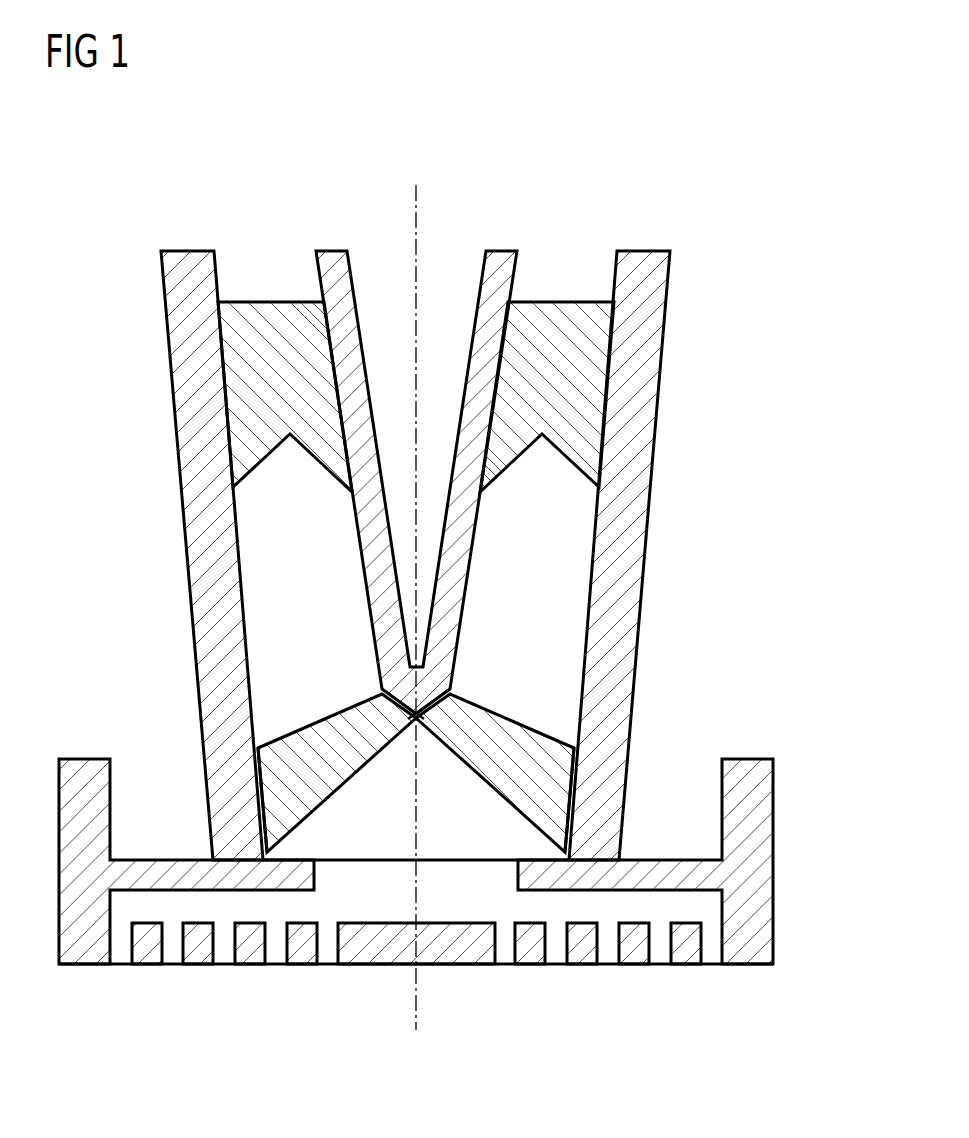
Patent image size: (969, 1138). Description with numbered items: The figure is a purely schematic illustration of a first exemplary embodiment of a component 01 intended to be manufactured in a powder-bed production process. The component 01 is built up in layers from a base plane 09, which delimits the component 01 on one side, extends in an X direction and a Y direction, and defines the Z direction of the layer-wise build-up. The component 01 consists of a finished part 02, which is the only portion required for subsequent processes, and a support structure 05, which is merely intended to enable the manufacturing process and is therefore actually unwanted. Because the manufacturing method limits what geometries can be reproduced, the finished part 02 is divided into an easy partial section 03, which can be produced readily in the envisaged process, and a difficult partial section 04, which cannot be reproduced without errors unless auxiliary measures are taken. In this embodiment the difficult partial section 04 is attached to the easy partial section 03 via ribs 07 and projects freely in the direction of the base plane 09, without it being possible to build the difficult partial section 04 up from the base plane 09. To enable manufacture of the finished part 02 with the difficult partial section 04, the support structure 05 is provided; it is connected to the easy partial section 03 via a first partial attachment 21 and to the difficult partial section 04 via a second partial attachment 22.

The component 01 is at (676, 186).
The finished part 02 is at (641, 517).
The easy partial section 03 is at (604, 537).
The difficult partial section 04 is at (462, 573).
The support structure 05 is at (360, 710).
The ribs 07 is at (563, 310).
The base plane 09 is at (504, 965).
The first partial attachment 21 is at (261, 742).
The second partial attachment 22 is at (388, 698).